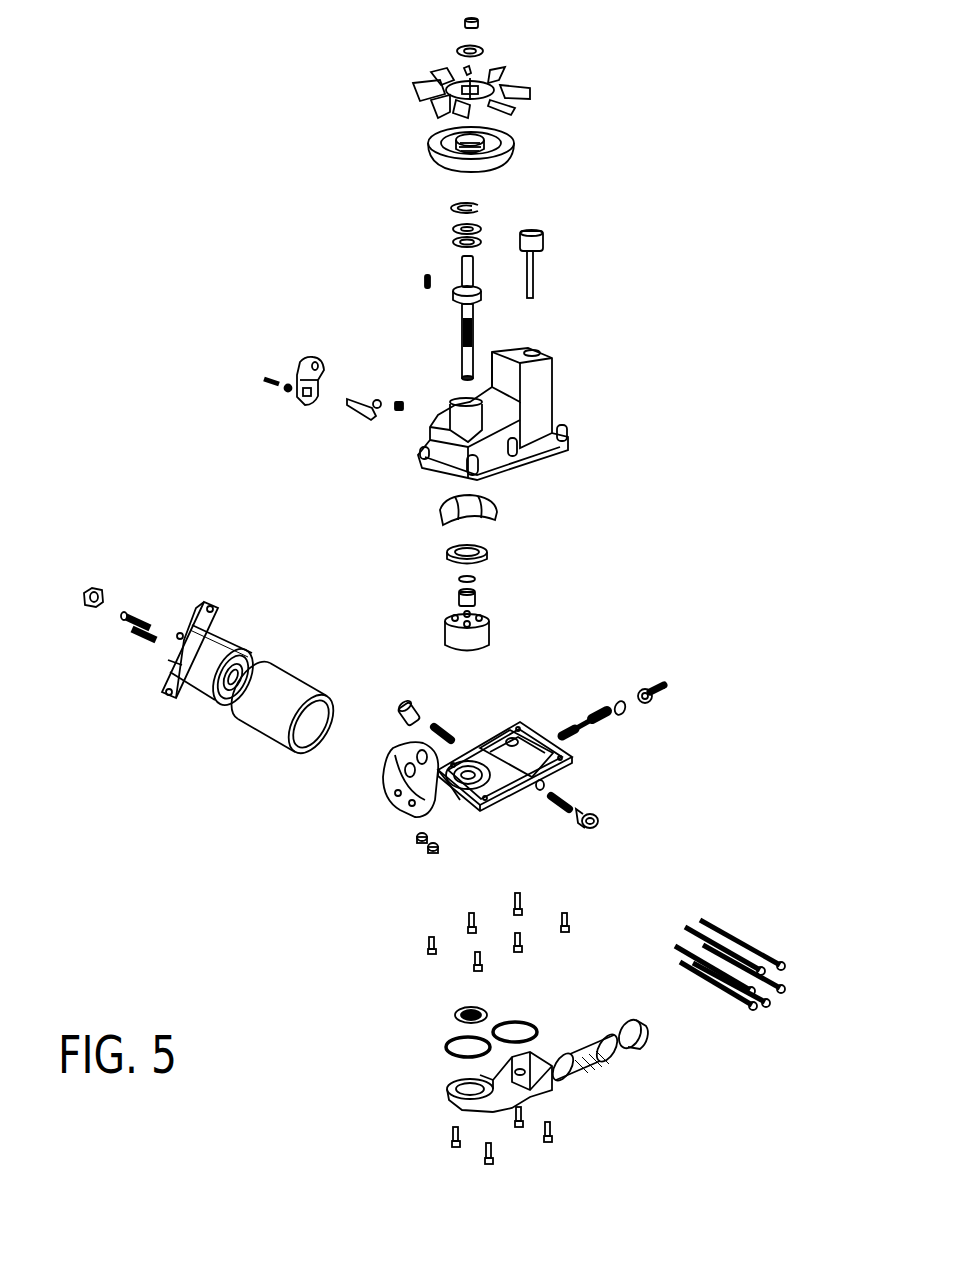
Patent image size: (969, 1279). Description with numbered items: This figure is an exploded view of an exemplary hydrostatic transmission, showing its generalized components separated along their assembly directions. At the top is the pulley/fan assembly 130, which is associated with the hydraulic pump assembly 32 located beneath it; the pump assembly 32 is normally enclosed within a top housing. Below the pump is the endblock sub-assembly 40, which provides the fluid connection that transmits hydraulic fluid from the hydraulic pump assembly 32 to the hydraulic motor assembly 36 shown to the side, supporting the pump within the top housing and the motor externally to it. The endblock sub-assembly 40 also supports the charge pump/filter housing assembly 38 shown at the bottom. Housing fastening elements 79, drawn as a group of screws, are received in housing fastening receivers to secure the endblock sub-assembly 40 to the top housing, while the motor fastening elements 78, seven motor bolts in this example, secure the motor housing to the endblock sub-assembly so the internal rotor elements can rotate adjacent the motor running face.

The pulley/fan assembly 130 is at (497, 8).
The hydraulic pump assembly 32 is at (524, 658).
The hydraulic motor assembly 36 is at (308, 762).
The endblock sub-assembly 40 is at (425, 868).
The housing fastening elements 79 is at (440, 988).
The motor fastening elements 78 is at (783, 1008).
The charge pump/filter housing assembly 38 is at (437, 1000).